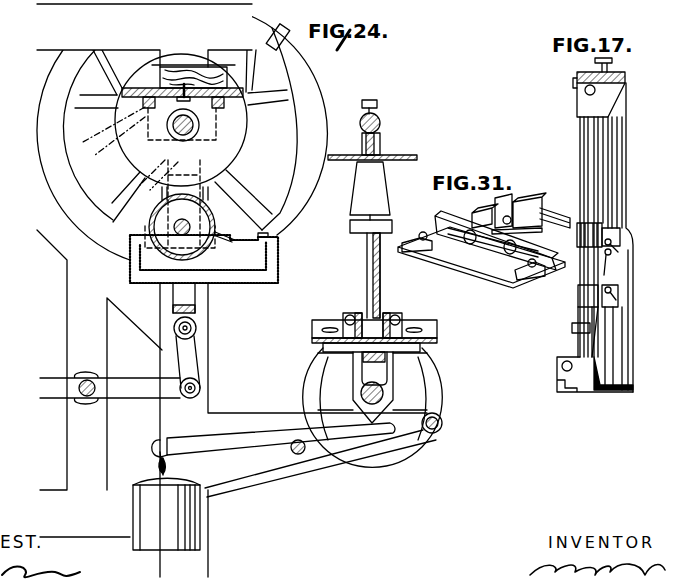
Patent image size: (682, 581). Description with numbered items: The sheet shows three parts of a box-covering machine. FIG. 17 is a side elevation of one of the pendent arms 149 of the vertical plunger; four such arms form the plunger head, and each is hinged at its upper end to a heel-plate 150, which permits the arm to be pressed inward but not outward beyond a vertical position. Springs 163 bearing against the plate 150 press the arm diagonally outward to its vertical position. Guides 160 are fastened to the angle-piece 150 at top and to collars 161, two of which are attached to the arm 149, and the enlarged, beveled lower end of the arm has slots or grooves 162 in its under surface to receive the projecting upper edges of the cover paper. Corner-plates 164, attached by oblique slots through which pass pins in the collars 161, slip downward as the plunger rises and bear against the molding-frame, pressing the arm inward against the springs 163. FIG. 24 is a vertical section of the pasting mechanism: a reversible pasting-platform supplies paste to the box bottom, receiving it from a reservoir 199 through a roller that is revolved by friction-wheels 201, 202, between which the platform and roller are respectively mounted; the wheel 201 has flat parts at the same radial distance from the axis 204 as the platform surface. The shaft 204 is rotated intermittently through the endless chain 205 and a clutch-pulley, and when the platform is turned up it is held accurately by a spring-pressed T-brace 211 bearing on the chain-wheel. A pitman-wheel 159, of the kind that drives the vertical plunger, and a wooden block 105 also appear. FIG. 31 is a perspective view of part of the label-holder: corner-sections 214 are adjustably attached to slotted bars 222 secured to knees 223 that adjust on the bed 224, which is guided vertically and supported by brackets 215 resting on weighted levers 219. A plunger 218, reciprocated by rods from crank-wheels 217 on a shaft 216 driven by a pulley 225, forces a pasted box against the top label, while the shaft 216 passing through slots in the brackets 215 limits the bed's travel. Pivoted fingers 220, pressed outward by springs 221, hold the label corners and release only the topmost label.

In FIG. 24, the wooden block 105 is at (191, 71).
In FIG. 24, the wheels 159 is at (182, 135).
In FIG. 24, the reservoir 199 is at (204, 257).
In FIG. 24, the friction-wheel 201 is at (245, 136).
In FIG. 24, the friction-wheel 202 is at (191, 227).
In FIG. 24, the axis 204 is at (195, 125).
In FIG. 24, the endless chain 205 is at (130, 148).
In FIG. 24, the T-brace 211 is at (180, 178).
In FIG. 24, the corner-sections 214 is at (381, 316).
In FIG. 31, the corner-sections 214 is at (509, 210).
In FIG. 24, the brackets 215 is at (371, 399).
In FIG. 24, the crank-wheels 217 is at (324, 372).
In FIG. 24, the plunger 218 is at (372, 166).
In FIG. 24, the weighted levers 219 is at (273, 449).
In FIG. 24, the pivoted fingers 220 is at (377, 317).
In FIG. 24, the springs 221 is at (375, 324).
In FIG. 24, the slotted bars 222 is at (318, 335).
In FIG. 24, the bed 224 is at (425, 346).
In FIG. 31, the bed 224 is at (481, 257).
In FIG. 31, the pulley 225 is at (480, 245).
In FIG. 31, the knees 223 is at (511, 229).
In FIG. 31, the shaft 216 is at (517, 229).
In FIG. 17, the heel-plates 150 is at (599, 97).
In FIG. 17, the slots or grooves 162 is at (577, 88).
In FIG. 17, the pendent arms 149 is at (585, 237).
In FIG. 17, the guides 160 is at (618, 237).
In FIG. 17, the springs 163 is at (602, 233).
In FIG. 17, the corner-plates 164 is at (616, 257).
In FIG. 17, the collars 161 is at (578, 295).